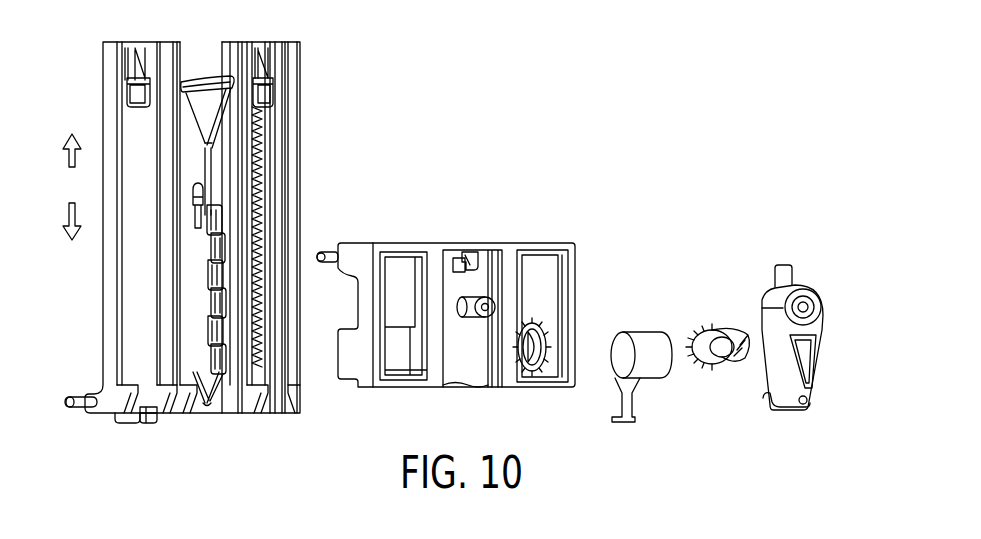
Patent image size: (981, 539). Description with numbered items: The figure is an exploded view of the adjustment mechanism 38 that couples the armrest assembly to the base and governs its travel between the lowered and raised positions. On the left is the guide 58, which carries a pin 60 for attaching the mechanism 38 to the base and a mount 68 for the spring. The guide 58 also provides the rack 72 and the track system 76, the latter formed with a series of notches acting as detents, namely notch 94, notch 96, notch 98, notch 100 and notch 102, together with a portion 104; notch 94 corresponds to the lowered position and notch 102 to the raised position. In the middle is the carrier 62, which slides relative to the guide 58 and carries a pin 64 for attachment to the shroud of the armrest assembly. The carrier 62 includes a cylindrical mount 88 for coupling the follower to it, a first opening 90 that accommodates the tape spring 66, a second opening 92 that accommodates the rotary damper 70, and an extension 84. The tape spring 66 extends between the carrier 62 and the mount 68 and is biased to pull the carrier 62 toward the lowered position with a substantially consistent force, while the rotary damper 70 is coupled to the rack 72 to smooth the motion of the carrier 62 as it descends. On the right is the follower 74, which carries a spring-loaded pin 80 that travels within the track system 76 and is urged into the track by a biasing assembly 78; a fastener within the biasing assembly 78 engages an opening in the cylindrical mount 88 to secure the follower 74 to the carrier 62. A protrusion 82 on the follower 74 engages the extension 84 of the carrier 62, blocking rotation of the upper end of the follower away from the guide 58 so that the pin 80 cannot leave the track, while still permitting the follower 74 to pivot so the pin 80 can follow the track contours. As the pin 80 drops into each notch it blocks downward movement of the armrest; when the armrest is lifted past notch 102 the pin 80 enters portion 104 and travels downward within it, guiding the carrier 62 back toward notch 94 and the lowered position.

The mechanism 38 is at (513, 178).
The guide 58 is at (284, 48).
The pin 60 is at (84, 402).
The carrier 62 is at (572, 260).
The pin 64 is at (322, 254).
The tape spring 66 is at (662, 367).
The mount 68 is at (152, 413).
The rotary damper 70 is at (723, 355).
The rack 72 is at (258, 158).
The follower 74 is at (786, 257).
The track system 76 is at (223, 242).
The biasing assembly 78 is at (779, 298).
The pin 80 is at (768, 398).
The protrusion 82 is at (793, 268).
The extension 84 is at (465, 252).
The cylindrical mount 88 is at (488, 305).
The first opening 90 is at (390, 370).
The second opening 92 is at (544, 330).
The notch 94 is at (210, 403).
The notch 96 is at (212, 352).
The notch 98 is at (213, 280).
The notch 100 is at (215, 253).
The notch 102 is at (205, 228).
The portion 104 is at (197, 223).